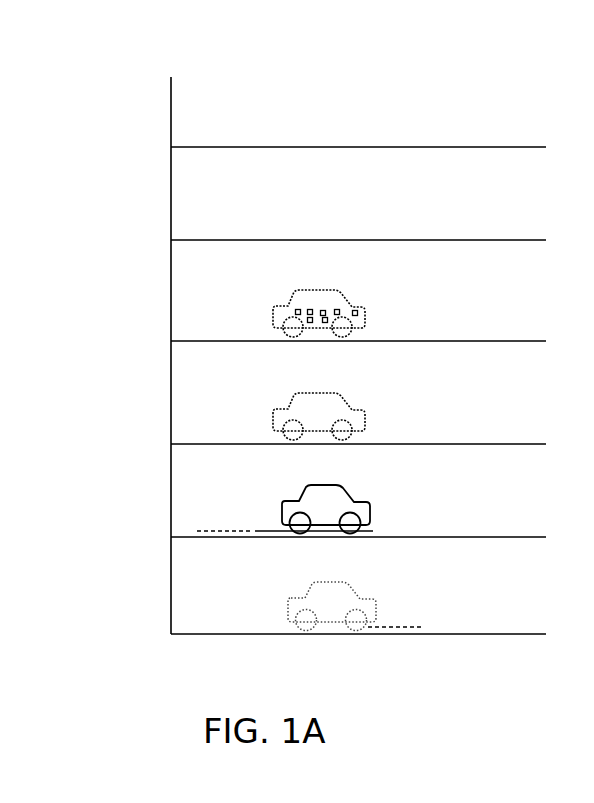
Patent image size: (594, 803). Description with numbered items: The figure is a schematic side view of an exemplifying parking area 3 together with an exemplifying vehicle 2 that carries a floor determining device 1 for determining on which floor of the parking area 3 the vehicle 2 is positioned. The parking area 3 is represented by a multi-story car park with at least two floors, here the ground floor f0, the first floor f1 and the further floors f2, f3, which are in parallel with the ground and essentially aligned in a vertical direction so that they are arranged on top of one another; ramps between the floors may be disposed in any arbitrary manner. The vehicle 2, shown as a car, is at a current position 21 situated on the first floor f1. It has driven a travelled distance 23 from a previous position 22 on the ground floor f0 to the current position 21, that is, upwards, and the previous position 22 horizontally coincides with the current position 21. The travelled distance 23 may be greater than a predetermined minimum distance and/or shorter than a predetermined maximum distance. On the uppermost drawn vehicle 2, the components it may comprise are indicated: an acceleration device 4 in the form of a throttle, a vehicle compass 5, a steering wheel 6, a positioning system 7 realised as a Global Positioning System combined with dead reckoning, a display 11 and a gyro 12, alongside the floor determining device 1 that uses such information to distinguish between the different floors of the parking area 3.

The floor determining device 1 is at (355, 310).
The vehicle 2 is at (278, 293).
The parking area 3 is at (460, 75).
The acceleration device 4 is at (336, 309).
The vehicle compass 5 is at (321, 310).
The steering wheel 6 is at (308, 309).
The positioning system 7 is at (296, 309).
The display 11 is at (309, 323).
The gyro 12 is at (325, 323).
The current position 21 is at (283, 493).
The previous position 22 is at (293, 592).
The travelled distance 23 is at (270, 530).
The ground floor f0 is at (462, 628).
The first floor f1 is at (462, 528).
The floor f2 is at (462, 435).
The floor f3 is at (462, 332).